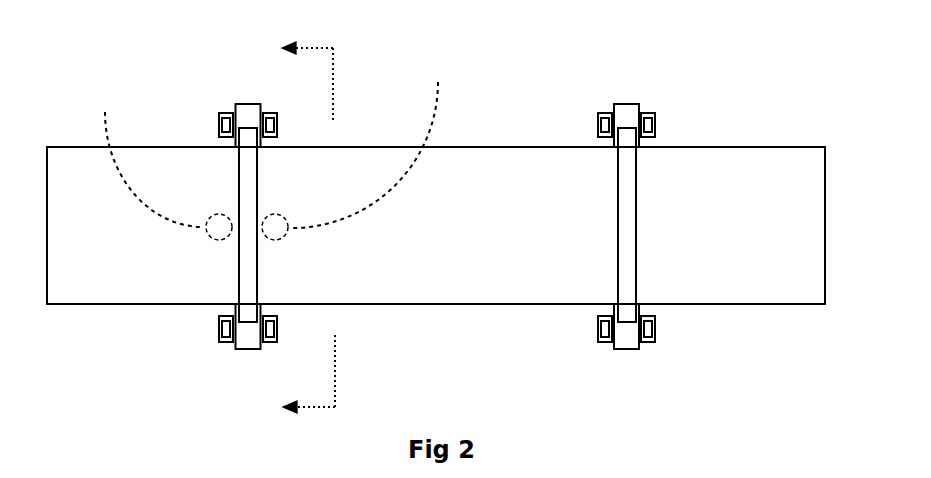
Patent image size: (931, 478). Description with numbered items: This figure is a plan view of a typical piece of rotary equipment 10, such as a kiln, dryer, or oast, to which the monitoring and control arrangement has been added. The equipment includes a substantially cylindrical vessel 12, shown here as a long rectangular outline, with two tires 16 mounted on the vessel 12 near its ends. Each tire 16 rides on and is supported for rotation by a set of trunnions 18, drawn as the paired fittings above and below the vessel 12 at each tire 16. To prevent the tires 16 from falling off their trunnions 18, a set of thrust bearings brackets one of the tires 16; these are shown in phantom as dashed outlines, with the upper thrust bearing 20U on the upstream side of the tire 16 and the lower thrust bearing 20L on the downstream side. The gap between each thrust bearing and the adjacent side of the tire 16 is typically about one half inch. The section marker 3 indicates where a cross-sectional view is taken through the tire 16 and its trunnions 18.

The rotary equipment 10 is at (174, 107).
The vessel 12 is at (753, 147).
The tires 16 is at (616, 203).
The trunnions 18 is at (242, 103).
The lower thrust bearing 20L is at (157, 158).
The upper thrust bearing 20U is at (362, 142).
The section line 3 is at (295, 228).